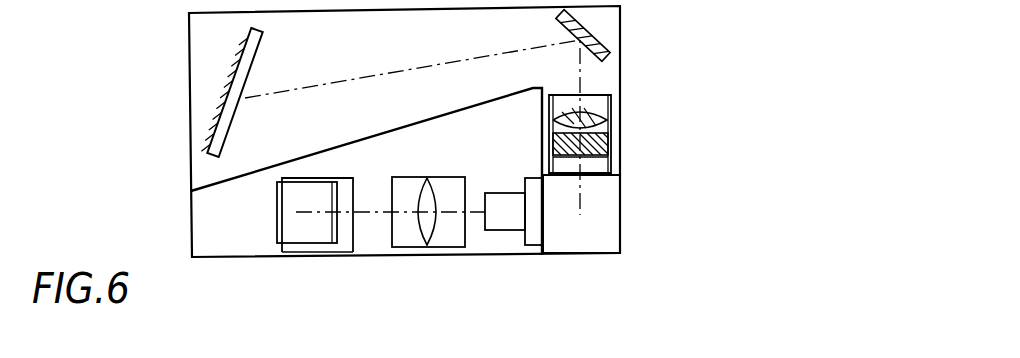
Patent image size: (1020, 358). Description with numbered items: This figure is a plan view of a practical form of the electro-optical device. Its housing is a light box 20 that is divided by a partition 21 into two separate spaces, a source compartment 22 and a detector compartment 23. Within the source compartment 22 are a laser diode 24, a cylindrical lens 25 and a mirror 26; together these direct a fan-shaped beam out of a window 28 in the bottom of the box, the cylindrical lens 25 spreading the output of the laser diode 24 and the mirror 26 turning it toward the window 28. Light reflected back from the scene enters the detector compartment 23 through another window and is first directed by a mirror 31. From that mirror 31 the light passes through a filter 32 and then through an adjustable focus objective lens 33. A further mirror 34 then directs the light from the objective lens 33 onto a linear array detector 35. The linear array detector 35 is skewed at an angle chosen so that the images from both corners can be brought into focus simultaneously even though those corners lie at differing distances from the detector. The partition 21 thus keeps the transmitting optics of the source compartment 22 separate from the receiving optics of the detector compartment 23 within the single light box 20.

The light box 20 is at (366, 257).
The partition 21 is at (411, 128).
The source compartment 22 is at (410, 169).
The detector compartment 23 is at (412, 127).
The laser diode 24 is at (507, 221).
The cylindrical lens 25 is at (430, 229).
The mirror 26 is at (298, 231).
The window 28 is at (340, 253).
The mirror 31 is at (597, 230).
The filter 32 is at (593, 143).
The adjustable focus objective lens 33 is at (593, 118).
The mirror 34 is at (582, 33).
The linear array detector 35 is at (218, 127).